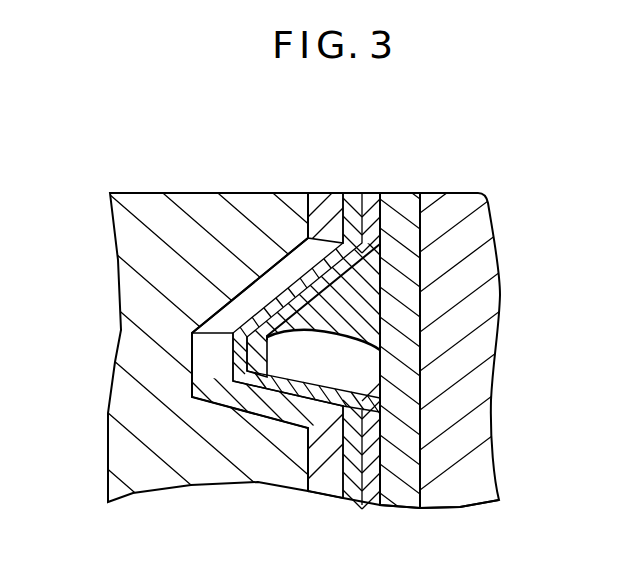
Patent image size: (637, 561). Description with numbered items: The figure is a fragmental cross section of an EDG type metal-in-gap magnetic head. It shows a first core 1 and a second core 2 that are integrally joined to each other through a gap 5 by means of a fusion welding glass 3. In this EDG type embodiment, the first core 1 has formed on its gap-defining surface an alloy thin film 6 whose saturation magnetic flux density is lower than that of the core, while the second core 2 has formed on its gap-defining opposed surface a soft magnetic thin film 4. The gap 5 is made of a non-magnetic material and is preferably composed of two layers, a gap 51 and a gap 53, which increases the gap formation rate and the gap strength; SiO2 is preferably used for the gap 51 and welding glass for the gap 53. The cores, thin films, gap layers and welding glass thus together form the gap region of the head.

The first core 1 is at (120, 395).
The second core 2 is at (487, 259).
The fusion welding glass 3 is at (368, 331).
The soft magnetic thin film 4 is at (410, 214).
The gap 5 is at (322, 130).
The gap 51 is at (349, 192).
The gap 53 is at (372, 192).
The alloy thin film 6 is at (318, 193).